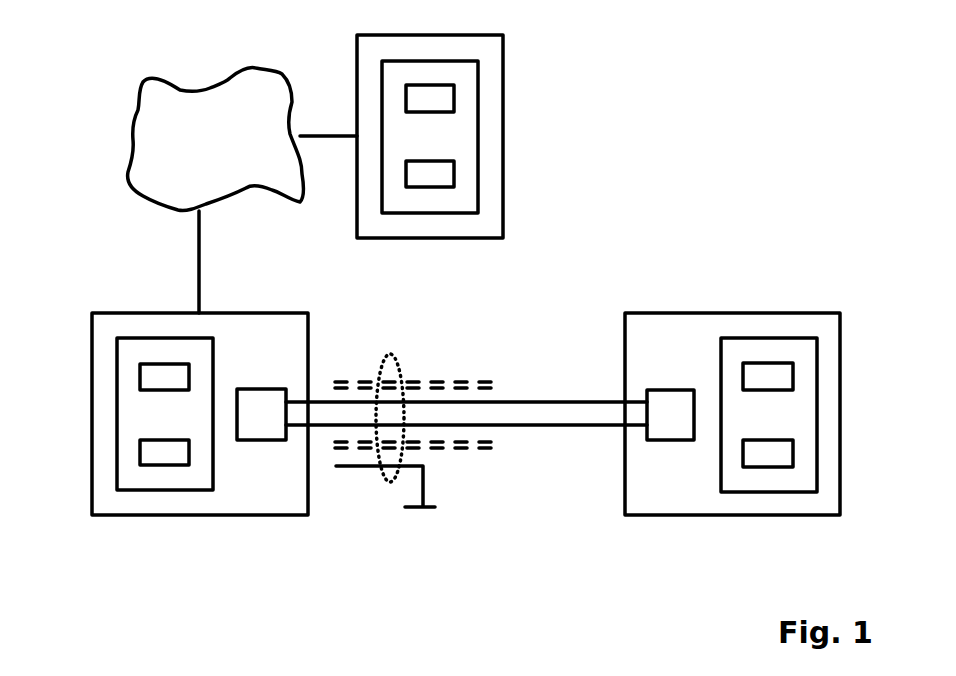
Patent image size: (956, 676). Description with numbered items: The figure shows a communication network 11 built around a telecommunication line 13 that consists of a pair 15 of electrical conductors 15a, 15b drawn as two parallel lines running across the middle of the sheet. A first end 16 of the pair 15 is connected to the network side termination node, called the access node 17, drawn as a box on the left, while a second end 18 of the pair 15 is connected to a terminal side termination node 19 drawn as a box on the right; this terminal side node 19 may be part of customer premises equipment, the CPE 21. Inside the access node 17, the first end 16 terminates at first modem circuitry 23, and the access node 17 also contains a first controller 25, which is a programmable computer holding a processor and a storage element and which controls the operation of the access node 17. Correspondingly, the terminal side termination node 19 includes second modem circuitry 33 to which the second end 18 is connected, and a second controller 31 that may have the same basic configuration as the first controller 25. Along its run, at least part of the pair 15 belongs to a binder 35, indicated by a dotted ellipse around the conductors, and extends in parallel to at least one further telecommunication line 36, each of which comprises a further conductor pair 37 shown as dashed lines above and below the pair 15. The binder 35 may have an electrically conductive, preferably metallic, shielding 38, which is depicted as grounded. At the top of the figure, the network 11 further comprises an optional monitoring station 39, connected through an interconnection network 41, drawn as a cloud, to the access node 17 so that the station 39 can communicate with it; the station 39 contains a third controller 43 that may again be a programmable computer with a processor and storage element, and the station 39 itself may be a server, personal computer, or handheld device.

The communication network 11 is at (118, 52).
The telecommunication line 13 is at (484, 305).
The pair of electrical conductors 15 is at (466, 480).
The electrical conductor 15a is at (590, 402).
The electrical conductor 15b is at (608, 425).
The first end 16 is at (339, 340).
The access node 17 is at (256, 313).
The second end 18 is at (608, 297).
The terminal side termination node 19 is at (657, 313).
The customer premises equipment 21 is at (718, 204).
The first modem circuitry 23 is at (277, 440).
The first controller 25 is at (168, 338).
The second controller 31 is at (800, 338).
The second modem circuitry 33 is at (685, 440).
The binder 35 is at (397, 357).
The further telecommunication line 36 is at (546, 363).
The further conductor pair 37 is at (508, 377).
The shielding 38 is at (422, 483).
The monitoring station 39 is at (503, 200).
The interconnection network 41 is at (229, 80).
The third controller 43 is at (478, 125).